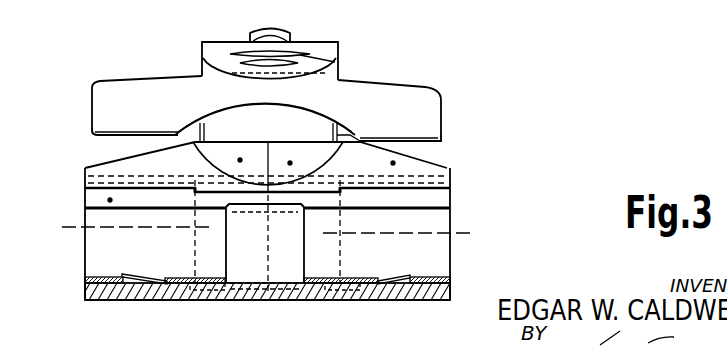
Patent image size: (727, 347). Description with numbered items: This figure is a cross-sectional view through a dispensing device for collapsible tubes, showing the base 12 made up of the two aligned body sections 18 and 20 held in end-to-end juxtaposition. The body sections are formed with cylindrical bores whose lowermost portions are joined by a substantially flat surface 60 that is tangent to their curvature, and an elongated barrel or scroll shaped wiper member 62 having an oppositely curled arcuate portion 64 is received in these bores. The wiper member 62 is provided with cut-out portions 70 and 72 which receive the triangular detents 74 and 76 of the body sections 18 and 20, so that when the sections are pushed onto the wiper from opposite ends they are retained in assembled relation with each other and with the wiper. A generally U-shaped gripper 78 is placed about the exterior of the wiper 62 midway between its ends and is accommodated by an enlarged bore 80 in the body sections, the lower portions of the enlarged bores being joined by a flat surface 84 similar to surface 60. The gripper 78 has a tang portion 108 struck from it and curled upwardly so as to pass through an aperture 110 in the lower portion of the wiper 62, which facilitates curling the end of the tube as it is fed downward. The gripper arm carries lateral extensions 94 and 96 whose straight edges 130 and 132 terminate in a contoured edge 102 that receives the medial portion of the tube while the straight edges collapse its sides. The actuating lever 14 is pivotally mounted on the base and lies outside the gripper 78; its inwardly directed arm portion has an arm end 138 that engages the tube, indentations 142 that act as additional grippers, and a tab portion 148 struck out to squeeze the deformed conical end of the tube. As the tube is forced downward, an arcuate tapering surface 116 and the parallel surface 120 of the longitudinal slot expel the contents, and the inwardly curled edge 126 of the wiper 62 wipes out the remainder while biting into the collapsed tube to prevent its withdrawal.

The base 12 is at (197, 308).
The actuating lever 14 is at (340, 48).
The body section 18 is at (122, 300).
The body section 20 is at (375, 300).
The flat surface 60 is at (440, 282).
The wiper member 62 is at (103, 276).
The curled arcuate portion 64 is at (110, 200).
The cut-out portion 70 is at (155, 275).
The cut-out portion 72 is at (375, 283).
The detent 74 is at (136, 274).
The detent 76 is at (398, 280).
The gripper 78 is at (365, 137).
The enlarged bore 80 is at (192, 191).
The flat surface 84 is at (270, 287).
The lateral extension 94 is at (125, 82).
The lateral extension 96 is at (445, 113).
The contoured edge 102 is at (240, 160).
The tang portion 108 is at (305, 243).
The aperture 110 is at (230, 281).
The arcuate tapering surface 116 is at (290, 163).
The parallel surface 120 is at (393, 163).
The inwardly curled edge 126 is at (100, 215).
The straight edge 130 is at (104, 141).
The straight edge 132 is at (425, 143).
The arm end 138 is at (322, 90).
The indentation 142 is at (322, 60).
The tab portion 148 is at (250, 29).